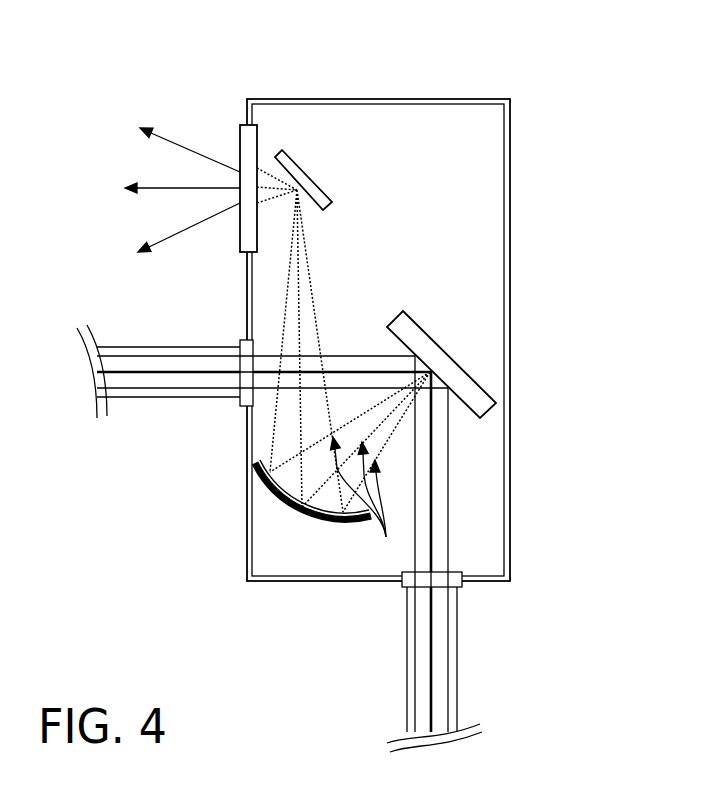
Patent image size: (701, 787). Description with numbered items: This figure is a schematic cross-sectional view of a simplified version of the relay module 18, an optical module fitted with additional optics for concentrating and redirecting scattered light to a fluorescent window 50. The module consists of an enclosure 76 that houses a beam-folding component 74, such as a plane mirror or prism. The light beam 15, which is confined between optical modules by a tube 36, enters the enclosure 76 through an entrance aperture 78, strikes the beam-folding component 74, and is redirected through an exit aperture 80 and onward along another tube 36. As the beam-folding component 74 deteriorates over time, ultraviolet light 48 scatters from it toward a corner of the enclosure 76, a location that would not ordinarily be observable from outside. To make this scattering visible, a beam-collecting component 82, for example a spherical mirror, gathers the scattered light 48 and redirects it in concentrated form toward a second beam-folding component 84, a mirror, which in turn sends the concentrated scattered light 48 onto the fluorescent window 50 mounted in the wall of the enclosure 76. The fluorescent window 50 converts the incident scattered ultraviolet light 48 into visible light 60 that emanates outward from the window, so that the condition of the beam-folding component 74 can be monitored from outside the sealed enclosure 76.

The relay module 18 is at (340, 98).
The light beam 15 is at (135, 360).
The tube 36 is at (165, 397).
The fluorescent window 50 is at (240, 237).
The visible light 60 is at (158, 183).
The beam-folding component 74 is at (473, 418).
The enclosure 76 is at (510, 278).
The entrance aperture 78 is at (241, 398).
The exit aperture 80 is at (457, 583).
The beam-collecting component 82 is at (330, 515).
The beam-folding component 84 is at (320, 210).
The scattered ultraviolet light 48 is at (359, 499).